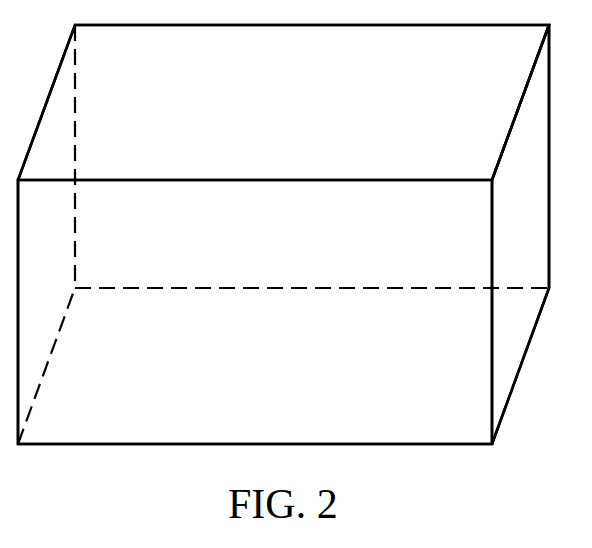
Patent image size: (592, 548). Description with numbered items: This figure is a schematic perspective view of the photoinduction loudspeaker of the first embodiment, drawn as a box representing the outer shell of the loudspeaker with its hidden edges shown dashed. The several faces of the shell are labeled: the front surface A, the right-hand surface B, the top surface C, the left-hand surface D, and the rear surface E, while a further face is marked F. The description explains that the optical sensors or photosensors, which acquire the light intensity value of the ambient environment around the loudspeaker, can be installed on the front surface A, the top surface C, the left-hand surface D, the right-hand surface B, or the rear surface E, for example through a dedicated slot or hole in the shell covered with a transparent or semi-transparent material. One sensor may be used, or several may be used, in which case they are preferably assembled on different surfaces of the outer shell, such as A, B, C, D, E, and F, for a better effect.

The front surface A is at (46, 366).
The right-hand surface B is at (61, 156).
The top surface C is at (283, 102).
The left-hand surface D is at (312, 313).
The rear surface E is at (255, 312).
The right side face F is at (520, 234).